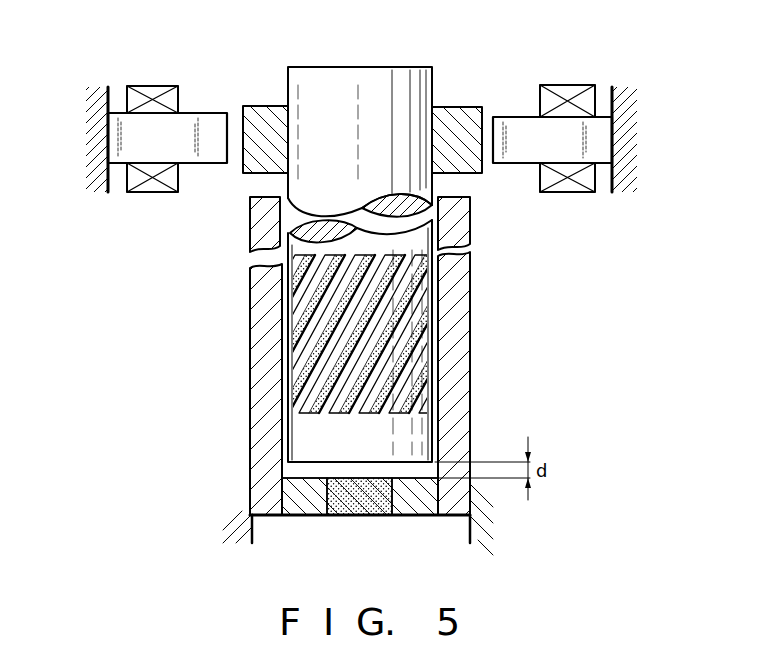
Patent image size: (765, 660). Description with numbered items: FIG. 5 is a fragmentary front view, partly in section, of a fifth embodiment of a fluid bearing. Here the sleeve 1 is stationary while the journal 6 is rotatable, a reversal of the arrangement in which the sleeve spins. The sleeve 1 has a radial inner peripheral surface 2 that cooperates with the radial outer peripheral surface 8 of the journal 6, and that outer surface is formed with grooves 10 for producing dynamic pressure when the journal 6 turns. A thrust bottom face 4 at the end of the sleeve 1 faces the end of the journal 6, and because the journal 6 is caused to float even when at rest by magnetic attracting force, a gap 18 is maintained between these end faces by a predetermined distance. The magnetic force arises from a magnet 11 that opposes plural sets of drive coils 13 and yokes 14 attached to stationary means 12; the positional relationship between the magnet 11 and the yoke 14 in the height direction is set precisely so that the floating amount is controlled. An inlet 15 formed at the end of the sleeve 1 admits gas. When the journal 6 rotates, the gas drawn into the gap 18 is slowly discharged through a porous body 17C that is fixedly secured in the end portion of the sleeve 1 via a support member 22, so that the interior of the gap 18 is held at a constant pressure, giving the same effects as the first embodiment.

The sleeve 1 is at (480, 282).
The radial inner peripheral surface 2 is at (439, 375).
The thrust bottom face 4 is at (430, 473).
The journal 6 is at (405, 65).
The radial outer peripheral surface 8 is at (281, 306).
The grooves 10 is at (317, 395).
The magnet 11 is at (253, 108).
The stationary means 12 is at (627, 97).
The drive coils 13 is at (147, 86).
The yokes 14 is at (212, 118).
The inlet 15 is at (285, 193).
The porous body 17C is at (372, 507).
The gap 18 is at (317, 468).
The support member 22 is at (287, 506).